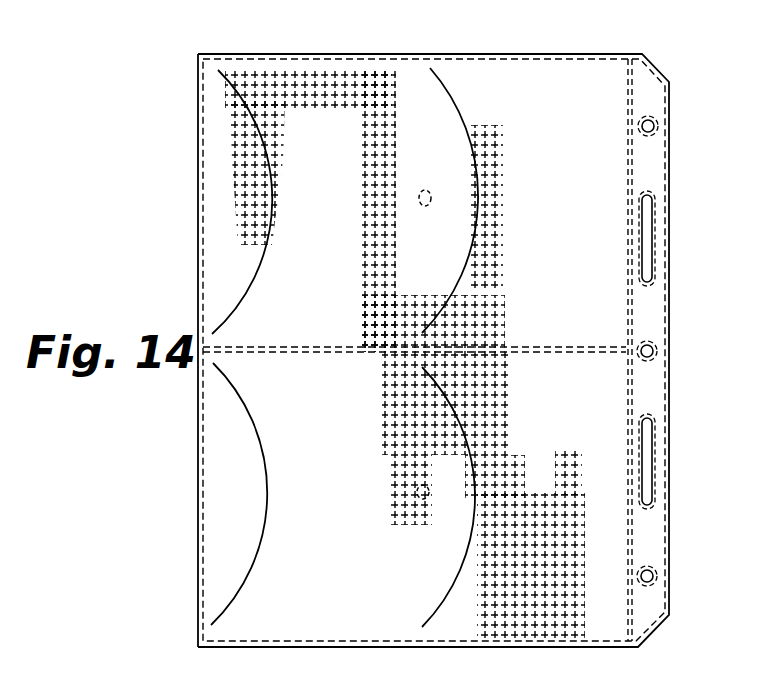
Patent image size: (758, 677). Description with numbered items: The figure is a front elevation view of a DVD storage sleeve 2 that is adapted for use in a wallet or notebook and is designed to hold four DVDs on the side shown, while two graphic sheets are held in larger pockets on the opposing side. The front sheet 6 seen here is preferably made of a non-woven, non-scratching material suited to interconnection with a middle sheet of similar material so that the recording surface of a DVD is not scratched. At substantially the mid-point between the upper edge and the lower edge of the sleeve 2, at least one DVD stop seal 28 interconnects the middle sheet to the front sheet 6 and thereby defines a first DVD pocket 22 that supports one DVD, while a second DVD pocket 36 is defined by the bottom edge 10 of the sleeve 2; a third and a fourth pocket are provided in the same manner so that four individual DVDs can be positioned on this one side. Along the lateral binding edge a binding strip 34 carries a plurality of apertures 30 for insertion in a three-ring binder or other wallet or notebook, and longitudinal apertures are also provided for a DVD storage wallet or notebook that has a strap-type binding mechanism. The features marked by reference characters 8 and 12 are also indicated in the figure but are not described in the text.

The sleeve 2 is at (505, 28).
The front sheet 6 is at (317, 70).
The backing sheet 8 is at (197, 183).
The bottom edge 10 is at (635, 93).
The top edge seam 12 is at (430, 53).
The first DVD pocket 22 is at (258, 262).
The DVD stop seal 28 is at (421, 185).
The apertures 30 is at (657, 125).
The binding strip 34 is at (656, 317).
The second DVD pocket 36 is at (468, 252).